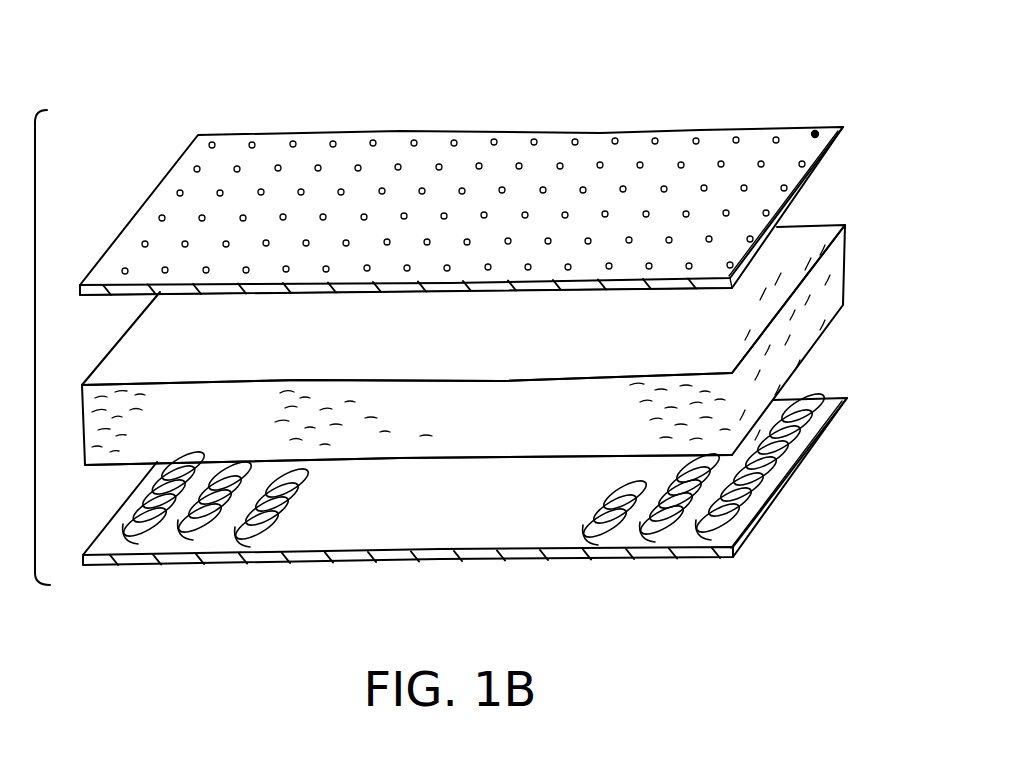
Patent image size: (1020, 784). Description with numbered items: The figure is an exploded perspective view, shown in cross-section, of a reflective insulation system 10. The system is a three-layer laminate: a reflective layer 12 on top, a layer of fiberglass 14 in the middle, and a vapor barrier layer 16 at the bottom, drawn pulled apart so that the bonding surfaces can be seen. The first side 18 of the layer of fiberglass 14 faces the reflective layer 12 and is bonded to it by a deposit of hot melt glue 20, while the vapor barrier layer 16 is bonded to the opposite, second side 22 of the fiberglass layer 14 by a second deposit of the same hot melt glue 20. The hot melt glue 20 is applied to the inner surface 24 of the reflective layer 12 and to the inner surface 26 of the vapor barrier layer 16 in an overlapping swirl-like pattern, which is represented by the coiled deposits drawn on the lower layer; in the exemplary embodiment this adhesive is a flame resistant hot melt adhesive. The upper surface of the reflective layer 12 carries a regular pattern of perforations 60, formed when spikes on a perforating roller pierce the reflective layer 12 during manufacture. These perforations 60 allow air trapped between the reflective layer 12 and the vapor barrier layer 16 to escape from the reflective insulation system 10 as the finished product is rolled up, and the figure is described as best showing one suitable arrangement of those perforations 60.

The reflective insulation system 10 is at (526, 84).
The reflective layer 12 is at (464, 208).
The perforations 60 is at (815, 133).
The inner surface of the reflective layer 24 is at (103, 297).
The layer of fiberglass 14 is at (472, 345).
The first side of the layer of fiberglass 18 is at (810, 240).
The second side of the fiberglass layer 22 is at (103, 467).
The vapor barrier layer 16 is at (465, 507).
The inner surface of the vapor barrier layer 26 is at (467, 522).
The hot melt glue 20 is at (817, 398).